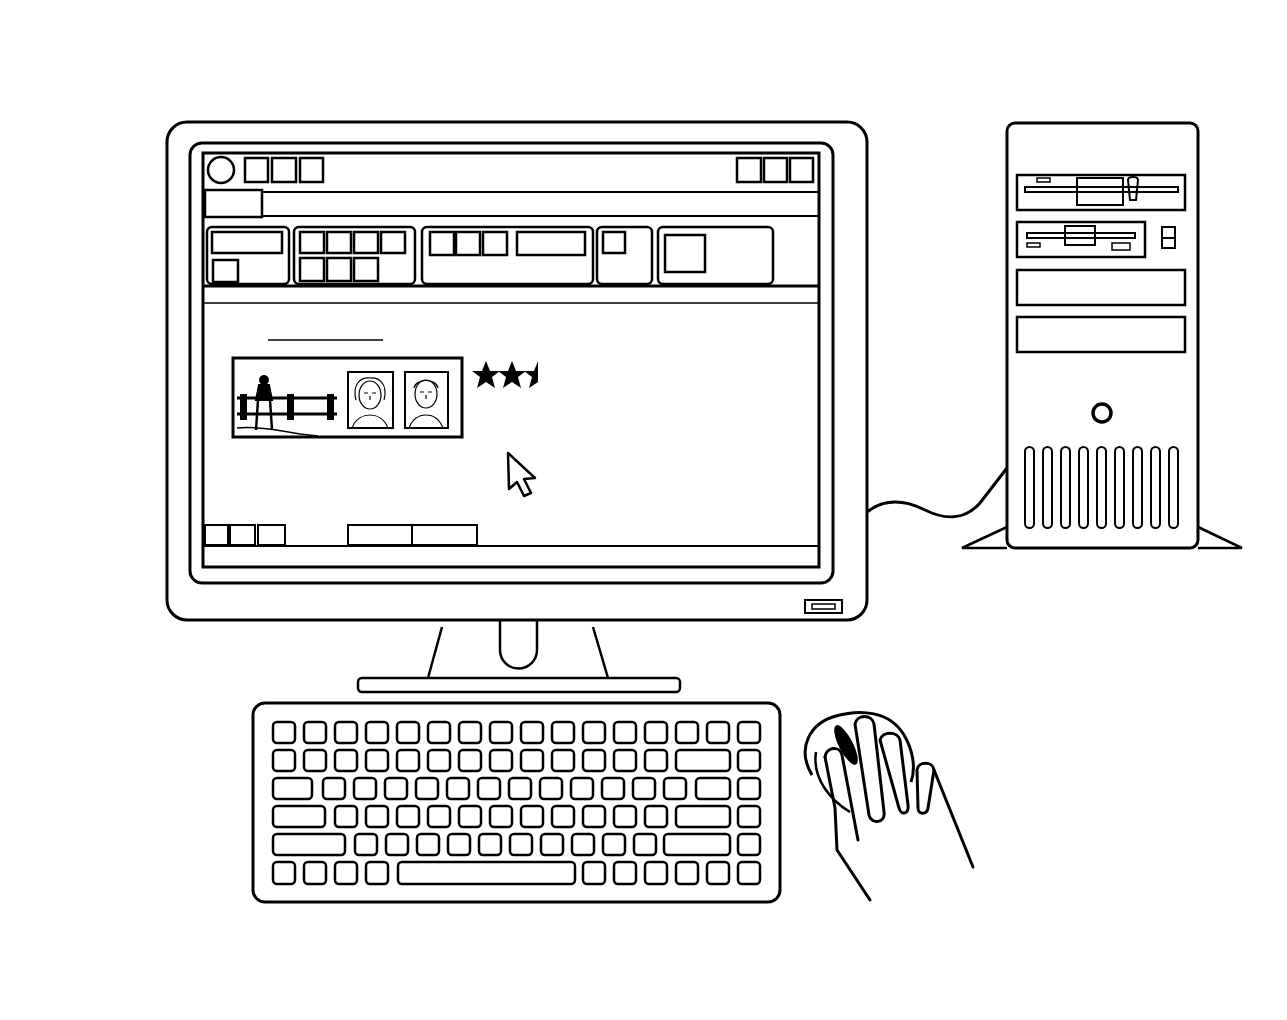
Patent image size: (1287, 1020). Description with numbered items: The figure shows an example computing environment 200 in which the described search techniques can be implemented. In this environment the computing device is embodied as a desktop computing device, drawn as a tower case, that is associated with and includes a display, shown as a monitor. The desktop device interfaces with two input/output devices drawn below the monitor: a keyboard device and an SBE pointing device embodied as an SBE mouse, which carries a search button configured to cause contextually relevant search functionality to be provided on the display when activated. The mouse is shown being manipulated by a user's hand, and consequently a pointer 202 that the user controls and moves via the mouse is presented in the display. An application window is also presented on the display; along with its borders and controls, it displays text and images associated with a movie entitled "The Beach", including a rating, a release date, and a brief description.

The computing environment 200 is at (470, 62).
The pointer 202 is at (585, 498).